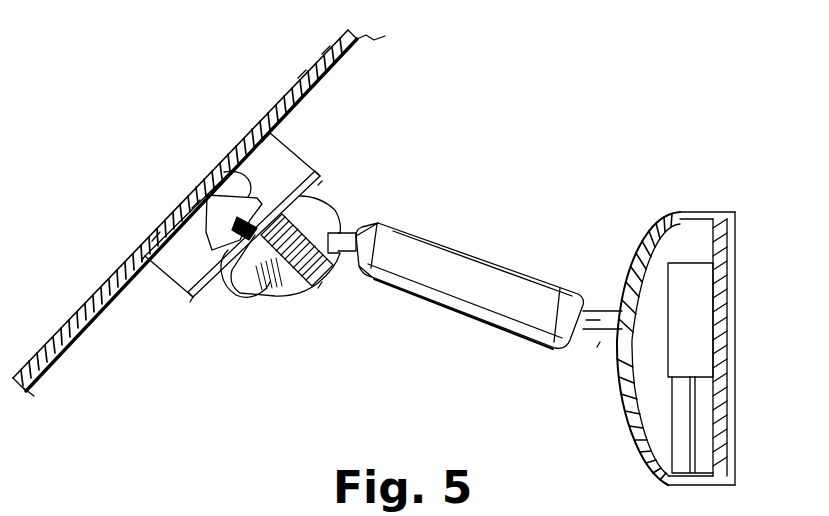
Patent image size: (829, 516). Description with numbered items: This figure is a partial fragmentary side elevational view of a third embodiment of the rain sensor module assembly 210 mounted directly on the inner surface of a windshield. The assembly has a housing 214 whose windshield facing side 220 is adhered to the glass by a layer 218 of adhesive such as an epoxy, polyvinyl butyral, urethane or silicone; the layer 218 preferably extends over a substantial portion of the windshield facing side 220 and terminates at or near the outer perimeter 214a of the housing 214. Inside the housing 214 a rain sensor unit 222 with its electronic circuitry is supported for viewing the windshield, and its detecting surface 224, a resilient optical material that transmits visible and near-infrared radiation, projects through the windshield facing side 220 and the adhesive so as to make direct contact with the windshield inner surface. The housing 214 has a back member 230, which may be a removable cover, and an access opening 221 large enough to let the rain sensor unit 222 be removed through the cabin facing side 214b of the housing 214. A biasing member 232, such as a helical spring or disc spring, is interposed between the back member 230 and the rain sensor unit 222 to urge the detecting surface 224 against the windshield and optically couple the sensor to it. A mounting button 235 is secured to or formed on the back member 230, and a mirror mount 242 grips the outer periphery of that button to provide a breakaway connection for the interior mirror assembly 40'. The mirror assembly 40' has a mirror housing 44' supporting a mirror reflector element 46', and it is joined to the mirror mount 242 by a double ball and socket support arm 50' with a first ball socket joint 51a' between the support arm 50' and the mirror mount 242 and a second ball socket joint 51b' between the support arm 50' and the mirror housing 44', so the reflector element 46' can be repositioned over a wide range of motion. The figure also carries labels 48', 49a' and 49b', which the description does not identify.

The interior mirror assembly 40' is at (554, 299).
The mirror housing 44' is at (662, 323).
The mirror reflector element 46' is at (760, 343).
The mounting plate 48' is at (686, 305).
The first pivot joint 49a' is at (355, 278).
The second pivot joint 49b' is at (577, 269).
The support arm 50' is at (469, 313).
The first ball socket joint 51a' is at (324, 330).
The second ball socket joint 51b' is at (567, 396).
The rain sensor module assembly 210 is at (269, 244).
The housing 214 is at (160, 282).
The outer perimeter 214a is at (145, 243).
The cabin facing side 214b is at (322, 180).
The layer of adhesive 218 is at (146, 262).
The windshield facing side 220 is at (272, 133).
The access opening 221 is at (191, 302).
The rain sensor unit 222 is at (240, 186).
The detecting surface 224 is at (196, 194).
The back member 230 is at (320, 174).
The biasing member 232 is at (218, 275).
The mounting button 235 is at (322, 196).
The mirror mount 242 is at (337, 216).